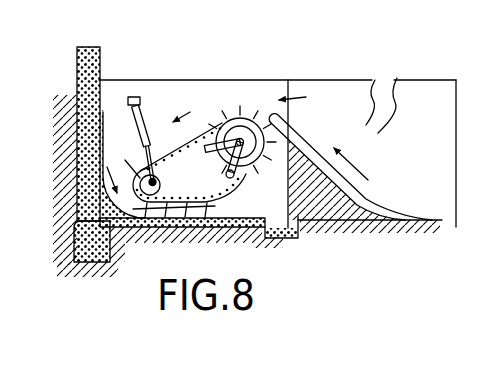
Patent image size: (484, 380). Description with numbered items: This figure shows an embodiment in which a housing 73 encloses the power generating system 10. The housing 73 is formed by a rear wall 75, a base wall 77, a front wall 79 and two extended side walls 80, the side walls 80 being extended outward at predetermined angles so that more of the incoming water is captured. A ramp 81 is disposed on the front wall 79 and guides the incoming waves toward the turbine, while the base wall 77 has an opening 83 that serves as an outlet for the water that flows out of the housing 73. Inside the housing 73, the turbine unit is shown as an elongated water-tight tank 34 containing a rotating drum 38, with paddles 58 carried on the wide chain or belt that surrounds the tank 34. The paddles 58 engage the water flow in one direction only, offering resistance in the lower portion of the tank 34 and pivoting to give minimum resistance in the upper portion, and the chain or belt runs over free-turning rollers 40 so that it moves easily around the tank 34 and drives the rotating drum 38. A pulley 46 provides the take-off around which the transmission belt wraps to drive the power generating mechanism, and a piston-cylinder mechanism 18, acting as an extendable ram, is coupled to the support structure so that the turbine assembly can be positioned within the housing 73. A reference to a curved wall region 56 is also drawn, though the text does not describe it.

The power generating system 10 is at (259, 72).
The piston-cylinder mechanism 18 is at (131, 107).
The water-tight tank 34 is at (172, 140).
The rotating drum 38 is at (242, 126).
The roller 40 is at (276, 219).
The pulley 46 is at (247, 176).
The curved wall 56 is at (122, 164).
The paddles 58 is at (196, 120).
The housing 73 is at (135, 80).
The rear wall 75 is at (76, 62).
The base wall 77 is at (164, 229).
The front wall 79 is at (296, 192).
The side walls 80 is at (318, 80).
The ramp 81 is at (311, 149).
The opening 83 is at (279, 235).